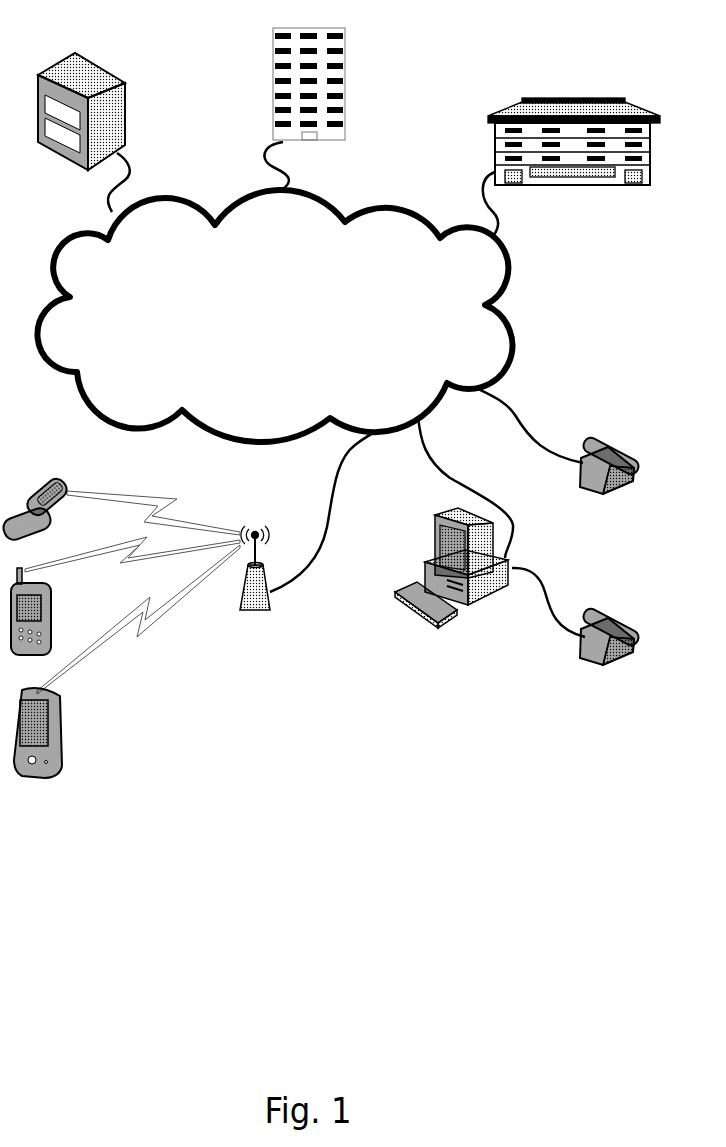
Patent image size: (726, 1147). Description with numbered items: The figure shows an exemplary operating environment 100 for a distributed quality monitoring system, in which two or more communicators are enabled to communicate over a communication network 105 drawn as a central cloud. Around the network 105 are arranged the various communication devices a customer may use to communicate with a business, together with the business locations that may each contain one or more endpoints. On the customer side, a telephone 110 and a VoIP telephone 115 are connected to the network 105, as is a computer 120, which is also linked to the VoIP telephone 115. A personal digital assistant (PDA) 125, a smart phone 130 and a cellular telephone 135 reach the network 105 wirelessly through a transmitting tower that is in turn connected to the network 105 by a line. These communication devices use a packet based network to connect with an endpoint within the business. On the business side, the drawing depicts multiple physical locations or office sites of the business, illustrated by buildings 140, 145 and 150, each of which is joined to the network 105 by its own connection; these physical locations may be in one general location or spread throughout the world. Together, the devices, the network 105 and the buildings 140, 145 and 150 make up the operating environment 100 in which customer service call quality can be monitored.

The operating environment 100 is at (626, 73).
The communication network 105 is at (257, 366).
The telephone 110 is at (594, 526).
The VoIP telephone 115 is at (589, 703).
The computer 120 is at (461, 646).
The personal digital assistant (PDA) 125 is at (85, 750).
The smart phone 130 is at (62, 621).
The cellular telephone 135 is at (72, 533).
The building 140 is at (43, 195).
The building 145 is at (299, 170).
The building 150 is at (570, 211).